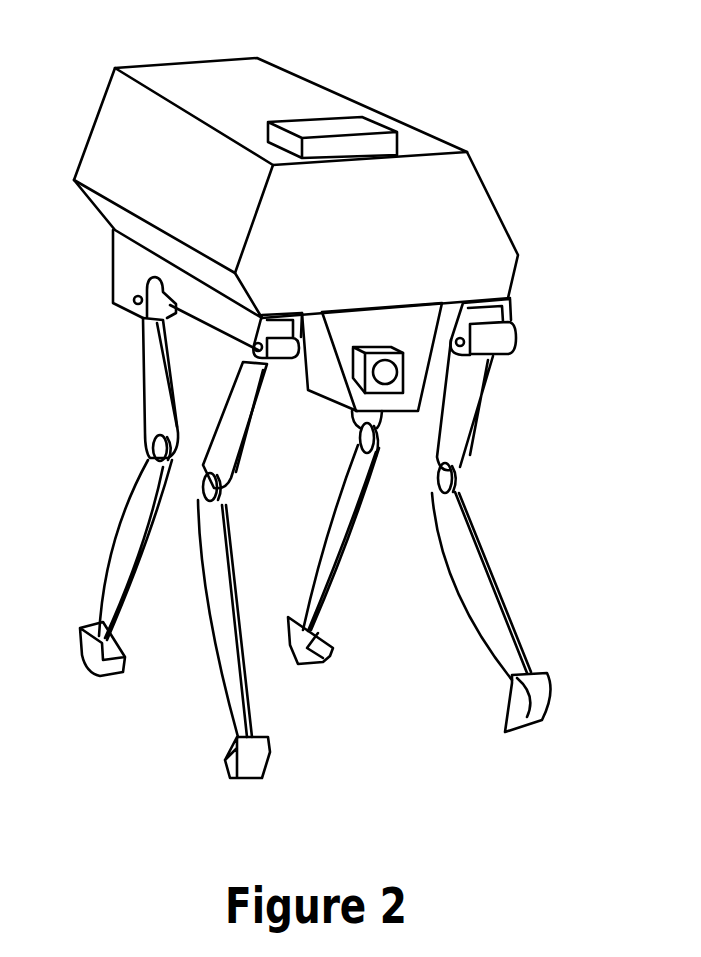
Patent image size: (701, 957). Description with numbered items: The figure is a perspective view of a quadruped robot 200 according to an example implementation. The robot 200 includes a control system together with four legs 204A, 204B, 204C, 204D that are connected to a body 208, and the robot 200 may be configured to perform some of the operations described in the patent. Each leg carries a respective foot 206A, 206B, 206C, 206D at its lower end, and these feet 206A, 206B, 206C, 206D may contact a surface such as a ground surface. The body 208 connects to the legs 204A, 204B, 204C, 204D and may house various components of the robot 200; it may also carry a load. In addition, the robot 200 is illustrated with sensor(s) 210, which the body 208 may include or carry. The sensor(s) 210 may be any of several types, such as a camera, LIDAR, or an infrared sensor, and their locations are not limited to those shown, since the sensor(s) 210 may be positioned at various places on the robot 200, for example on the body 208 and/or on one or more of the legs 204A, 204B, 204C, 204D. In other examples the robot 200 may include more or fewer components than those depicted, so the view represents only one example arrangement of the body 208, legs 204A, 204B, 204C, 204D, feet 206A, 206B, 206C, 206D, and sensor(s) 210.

The quadruped robot 200 is at (428, 66).
The body 208 is at (517, 268).
The sensor(s) 210 is at (364, 343).
The leg 204A is at (121, 449).
The leg 204B is at (284, 717).
The leg 204C is at (352, 620).
The leg 204D is at (516, 575).
The foot 206A is at (110, 675).
The foot 206B is at (270, 767).
The foot 206C is at (335, 648).
The foot 206D is at (550, 710).